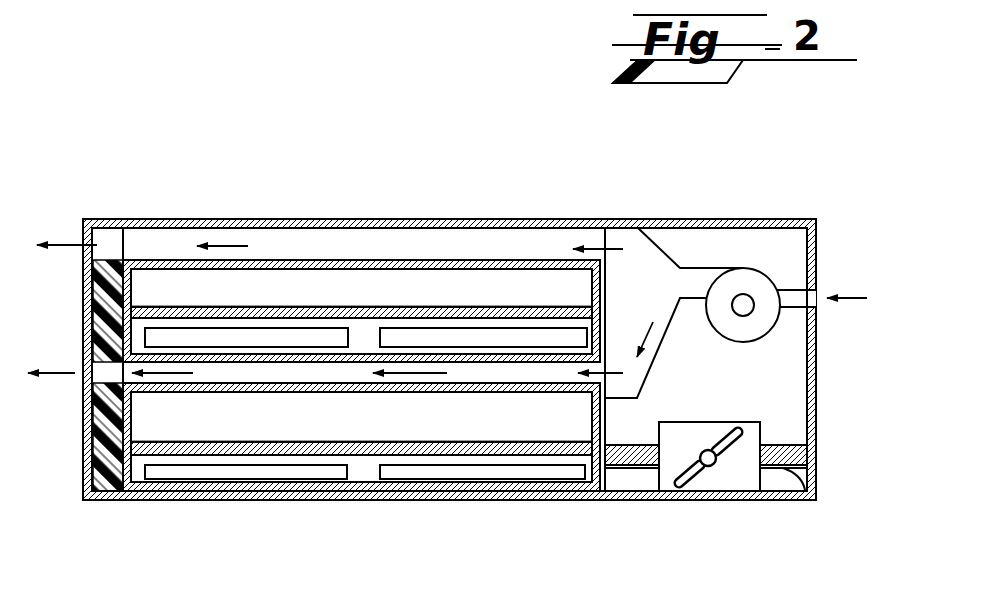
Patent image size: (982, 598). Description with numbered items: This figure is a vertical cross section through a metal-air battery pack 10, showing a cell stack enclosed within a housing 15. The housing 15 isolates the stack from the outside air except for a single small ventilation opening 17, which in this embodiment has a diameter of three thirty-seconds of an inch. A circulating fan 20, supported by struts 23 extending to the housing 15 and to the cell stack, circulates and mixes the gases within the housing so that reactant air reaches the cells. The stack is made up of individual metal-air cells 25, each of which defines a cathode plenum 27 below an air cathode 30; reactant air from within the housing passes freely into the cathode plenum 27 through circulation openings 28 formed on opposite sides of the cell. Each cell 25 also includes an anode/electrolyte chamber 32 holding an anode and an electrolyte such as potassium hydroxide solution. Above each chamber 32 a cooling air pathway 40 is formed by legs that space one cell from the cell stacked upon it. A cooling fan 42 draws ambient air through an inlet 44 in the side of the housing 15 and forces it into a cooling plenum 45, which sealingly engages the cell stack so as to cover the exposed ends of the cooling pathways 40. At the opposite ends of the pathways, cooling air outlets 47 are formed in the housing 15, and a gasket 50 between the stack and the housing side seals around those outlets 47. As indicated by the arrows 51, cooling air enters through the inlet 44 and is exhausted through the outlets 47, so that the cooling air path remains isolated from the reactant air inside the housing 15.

The metal-air battery pack 10 is at (238, 190).
The housing 15 is at (682, 220).
The ventilation opening 17 is at (818, 423).
The circulating fan 20 is at (713, 487).
The struts 23 is at (813, 487).
The metal-air cell 25 is at (605, 477).
The cathode plenum 27 is at (100, 314).
The circulation openings 28 is at (197, 337).
The air cathode 30 is at (255, 310).
The anode/electrolyte chamber 32 is at (468, 299).
The cooling air pathway 40 is at (530, 243).
The cooling fan 42 is at (740, 282).
The inlet 44 is at (818, 292).
The cooling plenum 45 is at (658, 333).
The cooling air outlets 47 is at (83, 236).
The gasket 50 is at (110, 500).
The arrows 51 is at (65, 247).